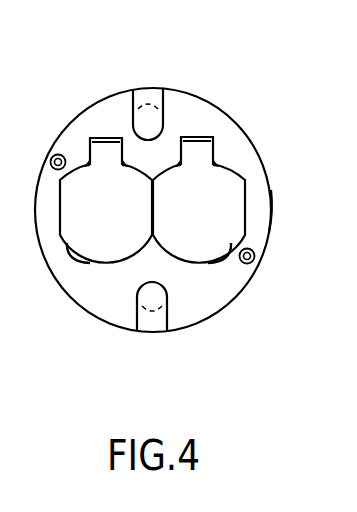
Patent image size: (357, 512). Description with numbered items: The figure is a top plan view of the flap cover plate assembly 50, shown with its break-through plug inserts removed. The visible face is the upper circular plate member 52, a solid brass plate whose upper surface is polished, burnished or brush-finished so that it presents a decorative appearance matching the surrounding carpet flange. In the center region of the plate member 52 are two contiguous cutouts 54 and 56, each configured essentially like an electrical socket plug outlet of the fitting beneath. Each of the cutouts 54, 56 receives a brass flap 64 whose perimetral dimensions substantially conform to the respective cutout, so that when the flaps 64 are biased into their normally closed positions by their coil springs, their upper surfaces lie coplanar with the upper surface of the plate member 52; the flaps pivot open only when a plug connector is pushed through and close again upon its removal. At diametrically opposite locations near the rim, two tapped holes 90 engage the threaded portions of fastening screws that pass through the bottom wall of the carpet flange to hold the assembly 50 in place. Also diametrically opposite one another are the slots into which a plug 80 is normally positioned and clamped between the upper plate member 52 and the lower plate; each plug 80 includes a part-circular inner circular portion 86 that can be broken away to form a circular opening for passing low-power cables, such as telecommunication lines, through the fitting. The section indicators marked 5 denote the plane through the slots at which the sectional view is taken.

The section line 5- 5 is at (150, 78).
The flap cover plate assembly 50 is at (250, 115).
The upper circular plate member 52 is at (263, 208).
The cutout 54 is at (237, 172).
The cutout 56 is at (82, 257).
The flap 64 is at (122, 217).
The plug 80 is at (150, 97).
The inner circular portion 86 is at (162, 298).
The tapped holes 90 is at (57, 154).